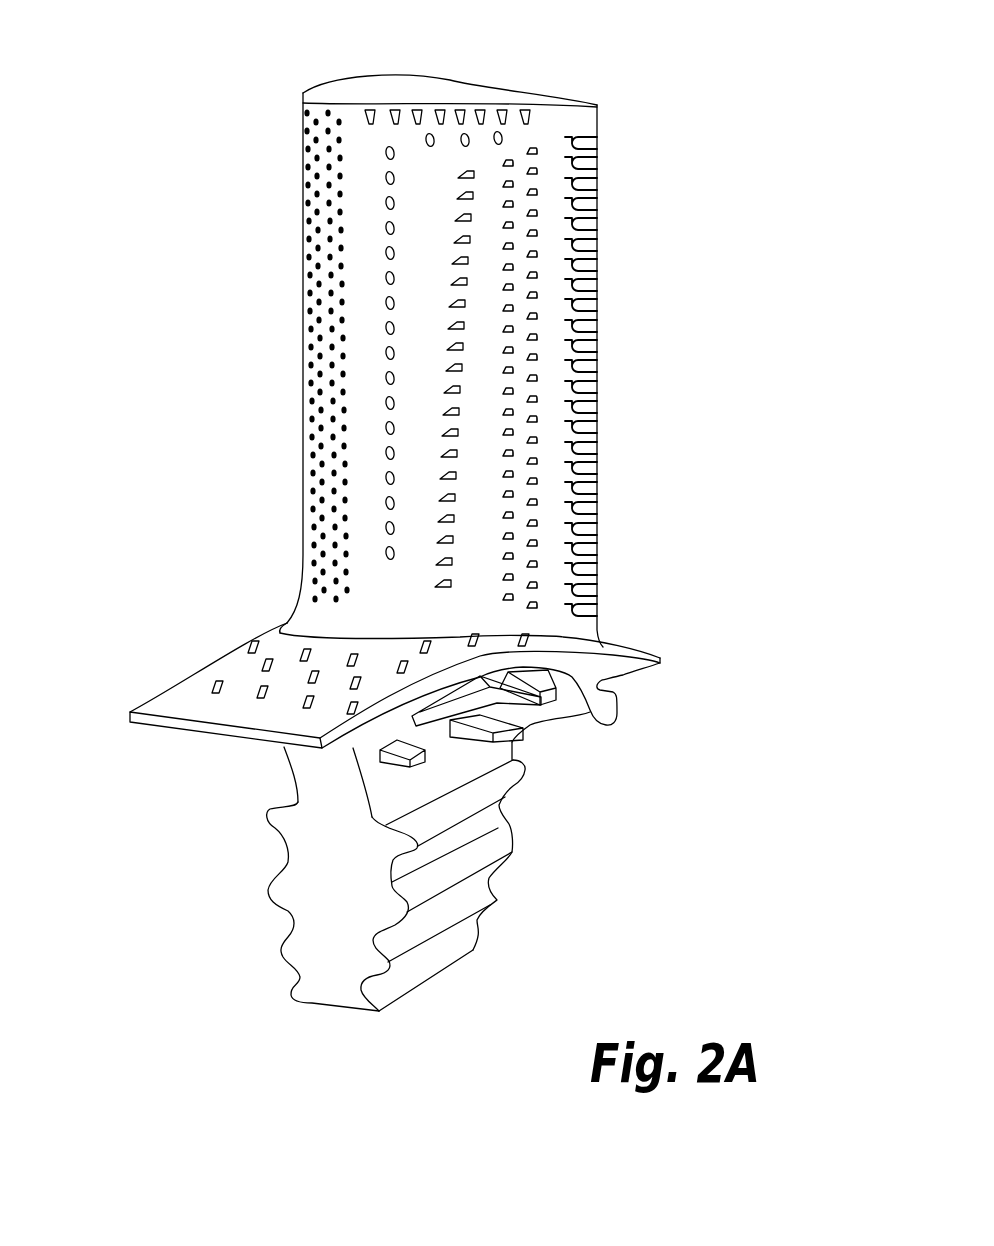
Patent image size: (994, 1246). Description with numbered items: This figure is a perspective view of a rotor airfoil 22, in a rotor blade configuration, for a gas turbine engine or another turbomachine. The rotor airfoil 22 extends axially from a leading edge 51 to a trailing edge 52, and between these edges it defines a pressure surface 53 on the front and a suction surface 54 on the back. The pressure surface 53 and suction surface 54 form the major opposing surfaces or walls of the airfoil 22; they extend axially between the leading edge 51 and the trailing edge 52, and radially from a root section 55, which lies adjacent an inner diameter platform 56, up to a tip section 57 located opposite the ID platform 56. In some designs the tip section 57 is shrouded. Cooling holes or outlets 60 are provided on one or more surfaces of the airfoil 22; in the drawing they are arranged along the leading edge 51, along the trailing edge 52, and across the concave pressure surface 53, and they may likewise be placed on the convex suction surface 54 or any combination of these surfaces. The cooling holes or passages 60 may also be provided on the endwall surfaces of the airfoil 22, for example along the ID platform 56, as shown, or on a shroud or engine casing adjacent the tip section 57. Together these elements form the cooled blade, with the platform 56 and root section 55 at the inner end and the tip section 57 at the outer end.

The rotor airfoil 22 is at (190, 105).
The leading edge 51 is at (300, 261).
The trailing edge 52 is at (600, 379).
The pressure surface 53 is at (420, 387).
The suction surface 54 is at (535, 91).
The root section 55 is at (333, 622).
The inner diameter platform 56 is at (207, 658).
The tip section 57 is at (483, 100).
The cooling holes 60 is at (533, 217).